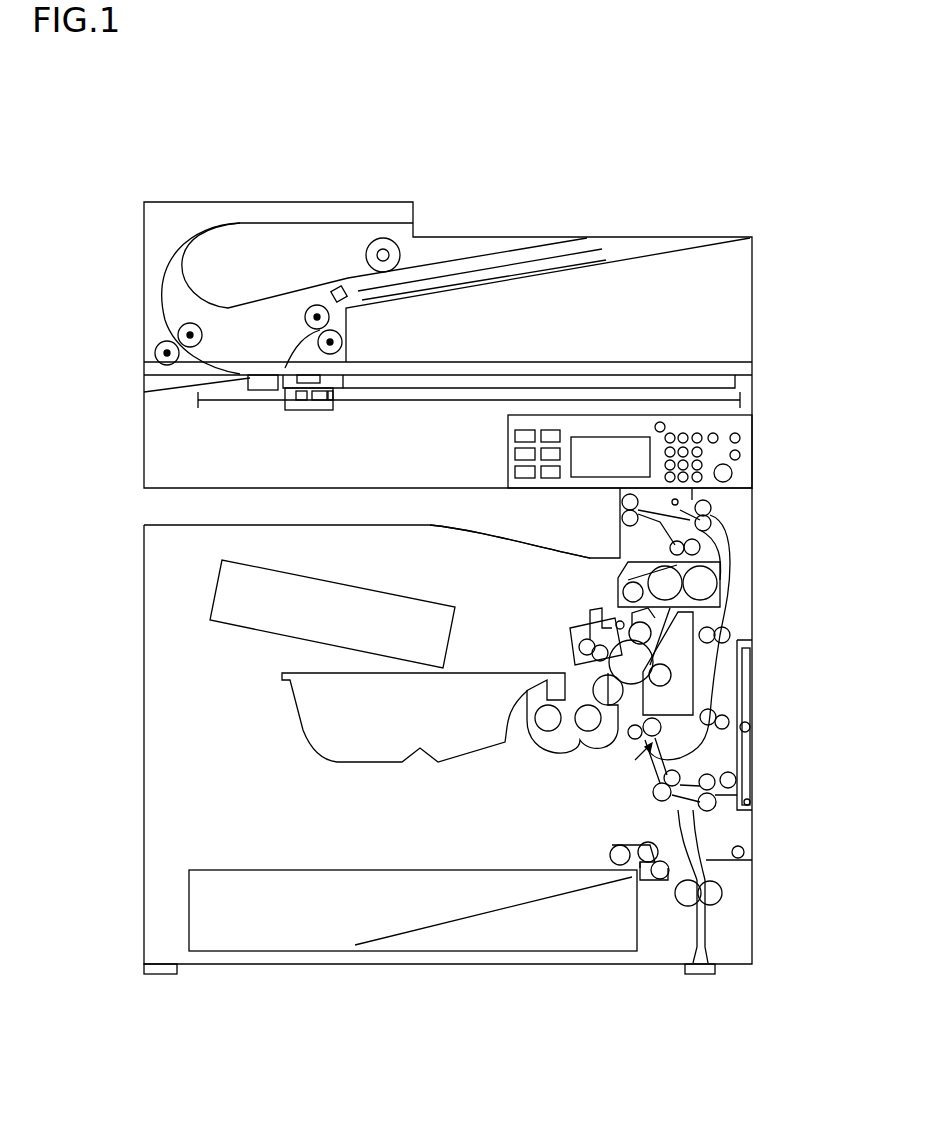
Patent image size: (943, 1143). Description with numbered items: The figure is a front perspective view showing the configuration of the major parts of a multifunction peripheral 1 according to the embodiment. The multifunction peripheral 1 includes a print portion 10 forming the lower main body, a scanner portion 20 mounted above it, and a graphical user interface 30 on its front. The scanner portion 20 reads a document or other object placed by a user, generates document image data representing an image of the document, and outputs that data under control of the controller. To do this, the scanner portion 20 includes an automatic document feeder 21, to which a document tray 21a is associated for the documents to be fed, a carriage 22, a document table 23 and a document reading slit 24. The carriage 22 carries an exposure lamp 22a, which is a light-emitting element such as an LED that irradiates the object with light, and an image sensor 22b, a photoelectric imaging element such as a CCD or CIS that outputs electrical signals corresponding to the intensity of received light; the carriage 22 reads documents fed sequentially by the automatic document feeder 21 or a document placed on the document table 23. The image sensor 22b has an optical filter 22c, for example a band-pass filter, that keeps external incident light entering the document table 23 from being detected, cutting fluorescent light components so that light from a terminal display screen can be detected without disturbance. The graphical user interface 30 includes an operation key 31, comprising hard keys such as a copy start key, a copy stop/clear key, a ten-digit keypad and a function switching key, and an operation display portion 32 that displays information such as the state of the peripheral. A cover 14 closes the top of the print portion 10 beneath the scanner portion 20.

The multifunction peripheral 1 is at (659, 154).
The print portion 10 is at (144, 666).
The top cover 14 is at (500, 535).
The scanner portion 20 is at (144, 425).
The automatic document feeder 21 is at (348, 202).
The document tray 21a is at (655, 237).
The carriage 22 is at (286, 406).
The exposure lamp 22a is at (301, 400).
The image sensor 22b is at (319, 400).
The optical filter 22c is at (333, 395).
The document table 23 is at (735, 381).
The document reading slit 24 is at (144, 392).
The graphical user interface 30 is at (742, 468).
The operation key 31 is at (660, 480).
The operation display portion 32 is at (590, 478).